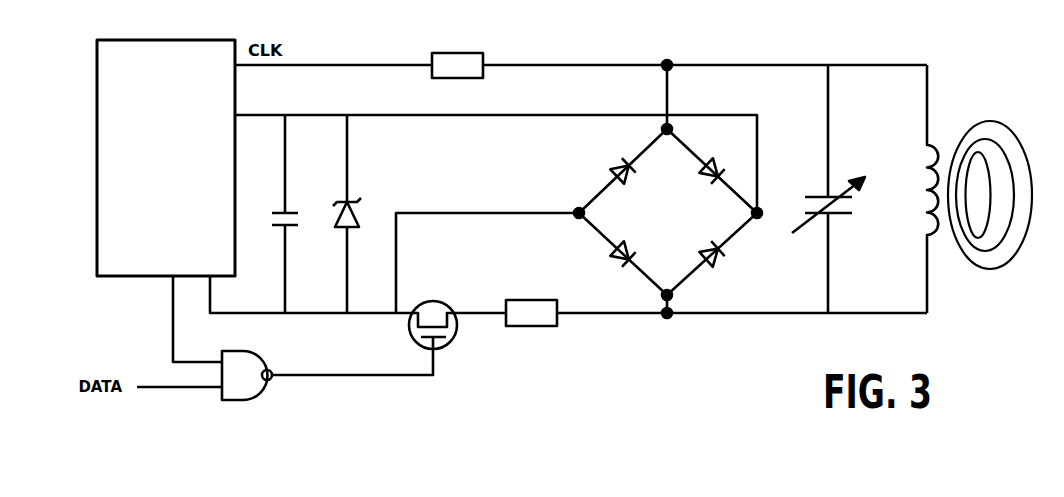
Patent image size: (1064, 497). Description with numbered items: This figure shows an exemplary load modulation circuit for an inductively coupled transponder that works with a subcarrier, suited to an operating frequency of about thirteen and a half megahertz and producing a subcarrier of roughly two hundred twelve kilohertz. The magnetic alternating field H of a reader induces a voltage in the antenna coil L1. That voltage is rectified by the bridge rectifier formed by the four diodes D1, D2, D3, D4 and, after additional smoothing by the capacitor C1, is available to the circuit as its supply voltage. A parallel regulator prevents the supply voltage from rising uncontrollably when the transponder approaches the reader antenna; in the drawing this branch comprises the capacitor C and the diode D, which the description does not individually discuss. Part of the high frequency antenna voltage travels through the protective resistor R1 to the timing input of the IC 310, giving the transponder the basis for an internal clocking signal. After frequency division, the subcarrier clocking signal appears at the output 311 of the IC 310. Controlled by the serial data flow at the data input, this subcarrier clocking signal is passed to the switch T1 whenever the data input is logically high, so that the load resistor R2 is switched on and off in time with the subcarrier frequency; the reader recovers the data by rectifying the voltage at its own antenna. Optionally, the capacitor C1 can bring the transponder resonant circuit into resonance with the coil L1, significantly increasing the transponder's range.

The IC 310 is at (166, 158).
The output 311 is at (188, 305).
The protective resistor R1 is at (457, 53).
The load resistor R2 is at (531, 328).
The capacitor C is at (275, 214).
The capacitor C1 is at (828, 189).
The zener diode D is at (355, 214).
The bridge rectifier diode D1 is at (719, 162).
The bridge rectifier diode D2 is at (713, 267).
The bridge rectifier diode D3 is at (608, 169).
The bridge rectifier diode D4 is at (608, 261).
The switch T1 is at (434, 325).
The antenna coil L1 is at (916, 189).
The magnetic alternating field H is at (992, 193).